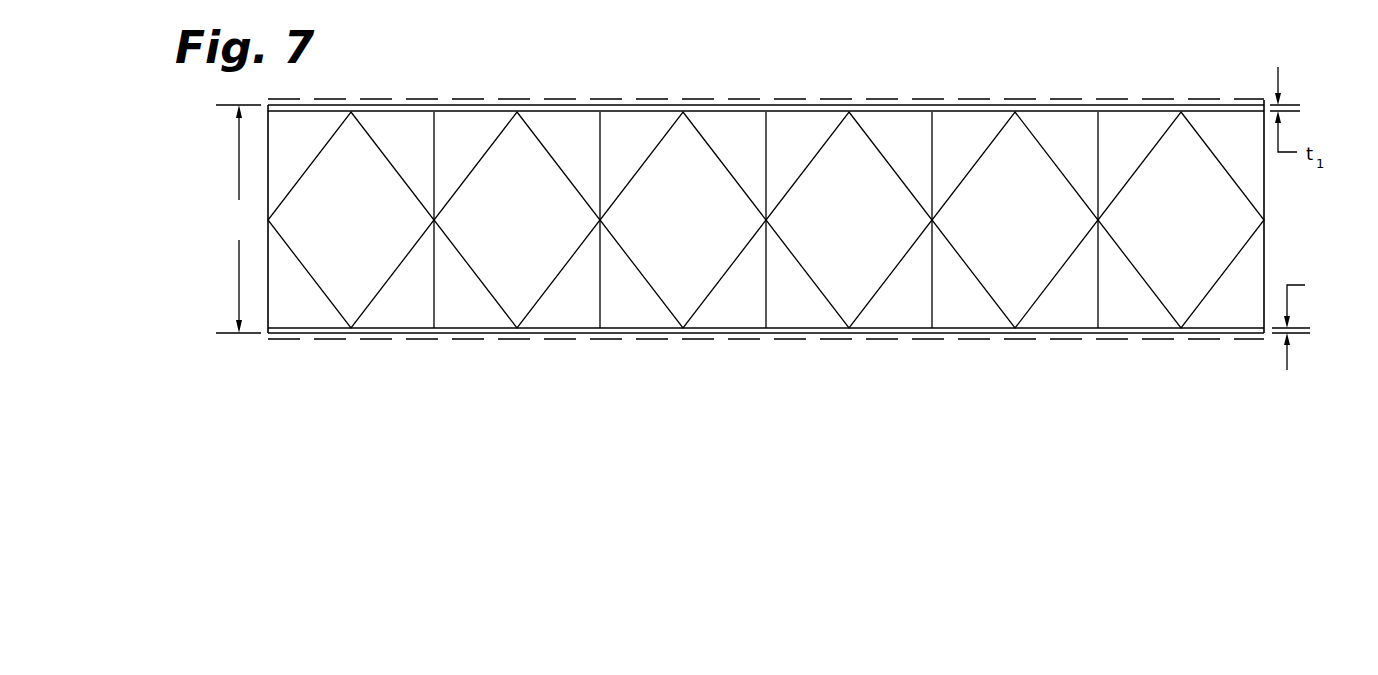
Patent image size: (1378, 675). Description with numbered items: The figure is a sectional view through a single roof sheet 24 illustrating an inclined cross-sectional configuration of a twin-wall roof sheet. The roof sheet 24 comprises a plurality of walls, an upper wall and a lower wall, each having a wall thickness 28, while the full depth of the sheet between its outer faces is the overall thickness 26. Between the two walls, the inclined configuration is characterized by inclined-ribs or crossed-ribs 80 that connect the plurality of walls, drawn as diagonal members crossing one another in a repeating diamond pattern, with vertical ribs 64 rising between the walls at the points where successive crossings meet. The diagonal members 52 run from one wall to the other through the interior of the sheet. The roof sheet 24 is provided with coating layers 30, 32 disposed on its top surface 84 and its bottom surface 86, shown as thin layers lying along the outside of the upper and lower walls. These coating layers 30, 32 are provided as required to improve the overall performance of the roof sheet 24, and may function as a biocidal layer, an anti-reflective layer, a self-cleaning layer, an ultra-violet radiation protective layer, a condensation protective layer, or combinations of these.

The roof sheet 24 is at (372, 46).
The overall thickness 26 is at (239, 175).
The wall thickness 28 is at (1287, 363).
The coating layer 30 is at (430, 102).
The coating layer 32 is at (372, 337).
The diagonal core member 52 is at (732, 132).
The vertical rib 64 is at (433, 298).
The inclined ribs or crossed ribs 80 is at (985, 285).
The top surface 84 is at (898, 110).
The bottom surface 86 is at (267, 338).